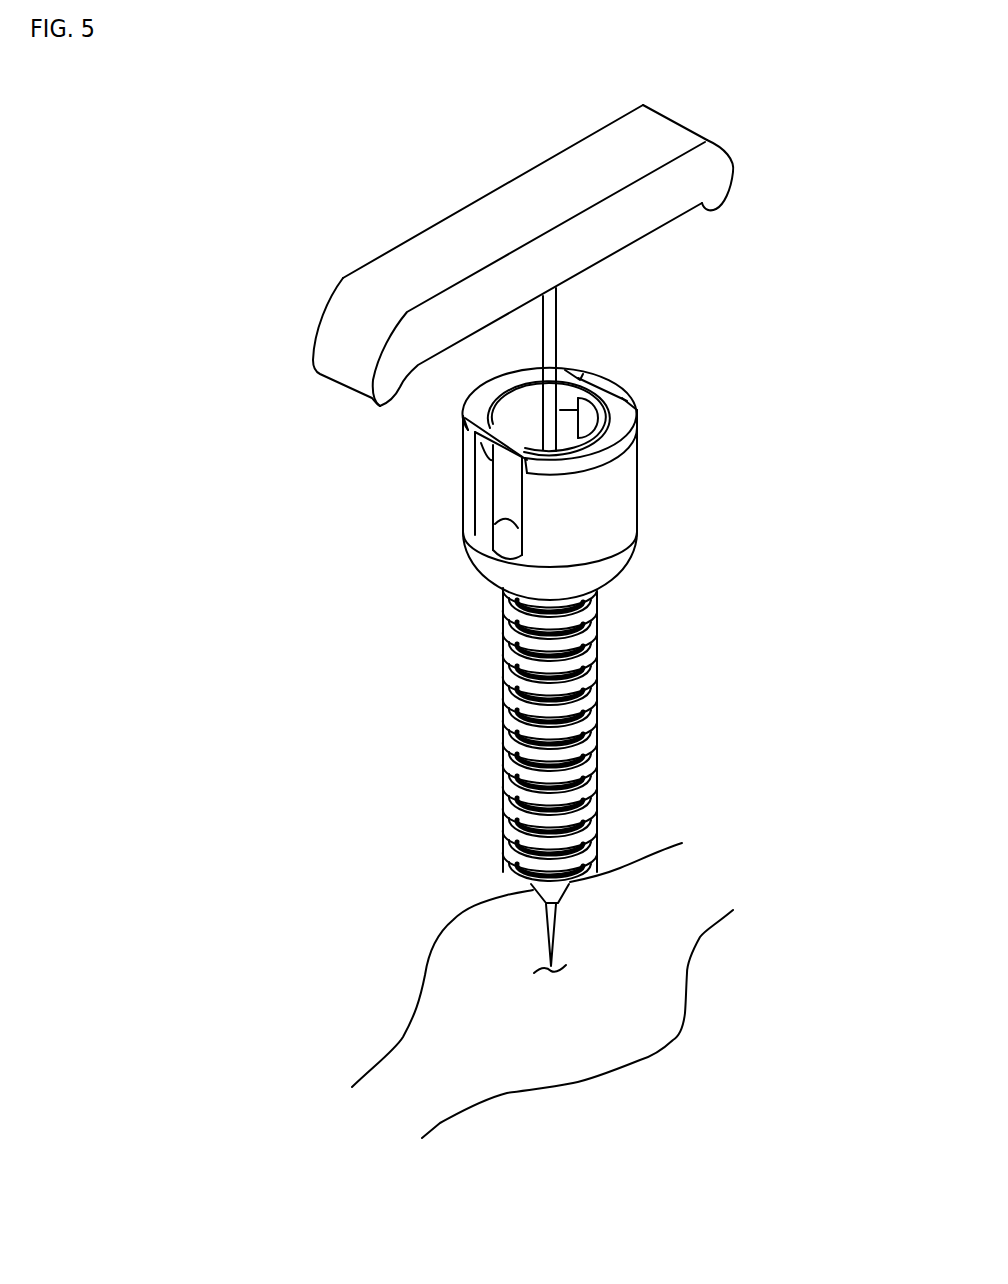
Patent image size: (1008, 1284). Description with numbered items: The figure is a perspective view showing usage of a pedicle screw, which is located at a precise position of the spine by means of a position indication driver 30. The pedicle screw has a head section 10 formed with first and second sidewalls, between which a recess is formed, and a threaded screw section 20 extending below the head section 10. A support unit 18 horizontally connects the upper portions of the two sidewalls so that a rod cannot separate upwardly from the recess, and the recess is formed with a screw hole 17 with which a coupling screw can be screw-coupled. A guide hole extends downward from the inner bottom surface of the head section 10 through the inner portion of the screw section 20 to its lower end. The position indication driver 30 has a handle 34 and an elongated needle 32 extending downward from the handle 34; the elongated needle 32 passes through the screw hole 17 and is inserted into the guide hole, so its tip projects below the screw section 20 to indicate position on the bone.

The head section 10 is at (645, 492).
The screw hole 17 is at (568, 390).
The support unit 18 is at (467, 415).
The screw section 20 is at (610, 741).
The position indication driver 30 is at (745, 131).
The elongated needle 32 is at (553, 328).
The handle 34 is at (685, 202).